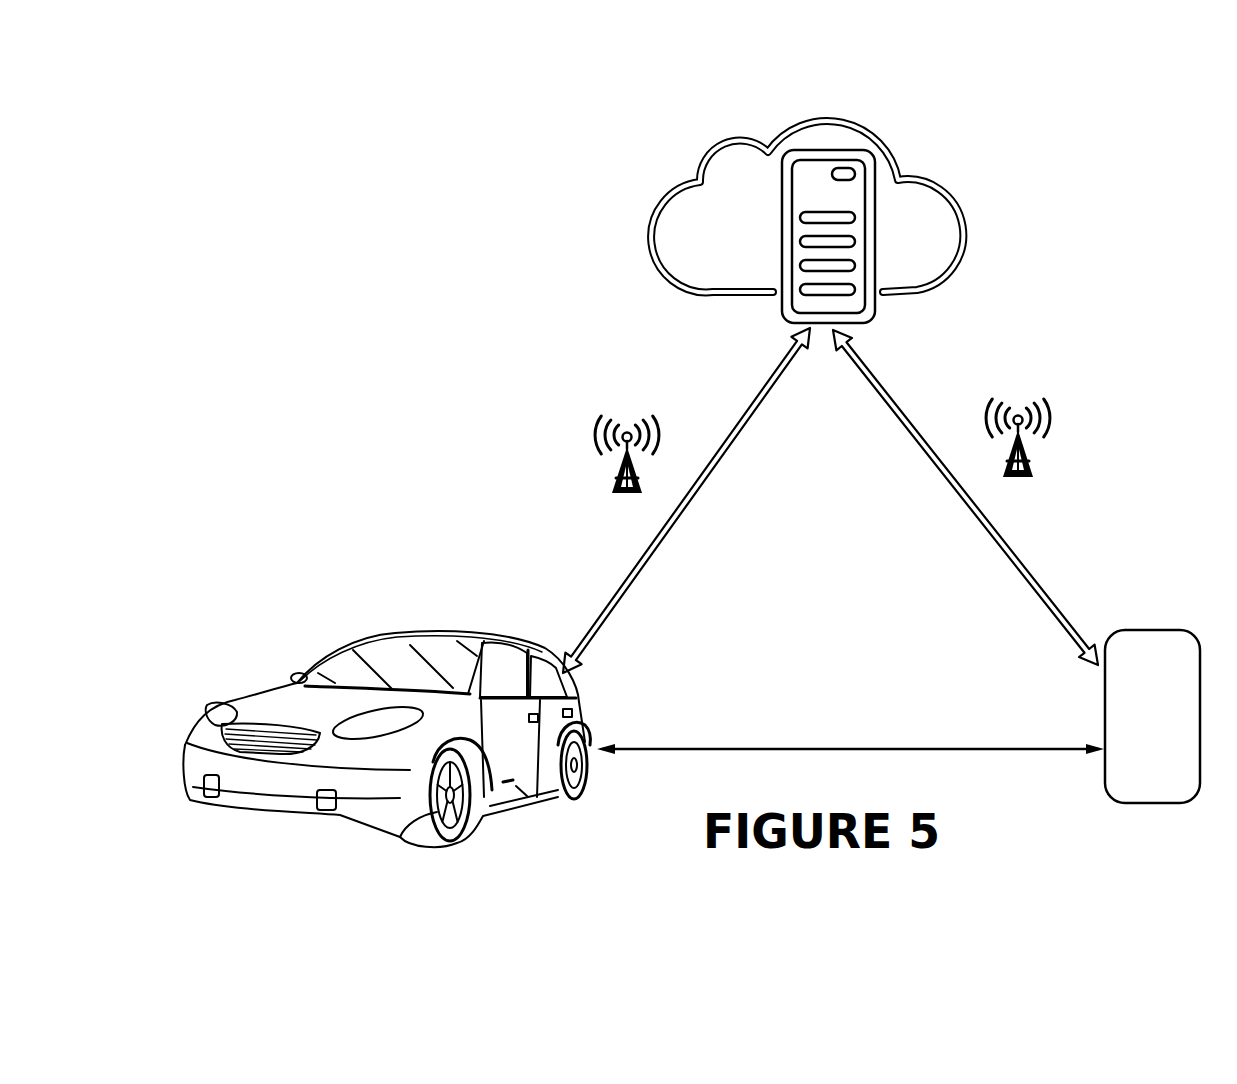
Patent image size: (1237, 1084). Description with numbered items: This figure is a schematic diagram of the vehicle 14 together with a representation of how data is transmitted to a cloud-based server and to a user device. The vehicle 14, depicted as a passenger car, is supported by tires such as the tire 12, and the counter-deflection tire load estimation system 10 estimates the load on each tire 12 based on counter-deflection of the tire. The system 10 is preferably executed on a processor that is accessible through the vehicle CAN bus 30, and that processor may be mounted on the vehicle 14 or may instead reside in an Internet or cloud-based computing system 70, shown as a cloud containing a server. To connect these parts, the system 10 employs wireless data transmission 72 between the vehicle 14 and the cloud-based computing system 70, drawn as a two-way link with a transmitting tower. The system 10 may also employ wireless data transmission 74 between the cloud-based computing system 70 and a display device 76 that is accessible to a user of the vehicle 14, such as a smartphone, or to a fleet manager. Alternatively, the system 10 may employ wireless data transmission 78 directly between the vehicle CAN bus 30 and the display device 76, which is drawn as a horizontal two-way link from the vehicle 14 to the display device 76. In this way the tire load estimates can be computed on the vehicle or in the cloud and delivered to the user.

The counter-deflection tire load estimation system 10 is at (1158, 205).
The tire 12 is at (478, 834).
The vehicle 14 is at (439, 768).
The vehicle CAN bus 30 is at (522, 787).
The cloud-based computing system 70 is at (742, 296).
The wireless data transmission 72 is at (641, 560).
The wireless data transmission 74 is at (1016, 534).
The display device 76 is at (1168, 731).
The wireless data transmission 78 is at (824, 749).